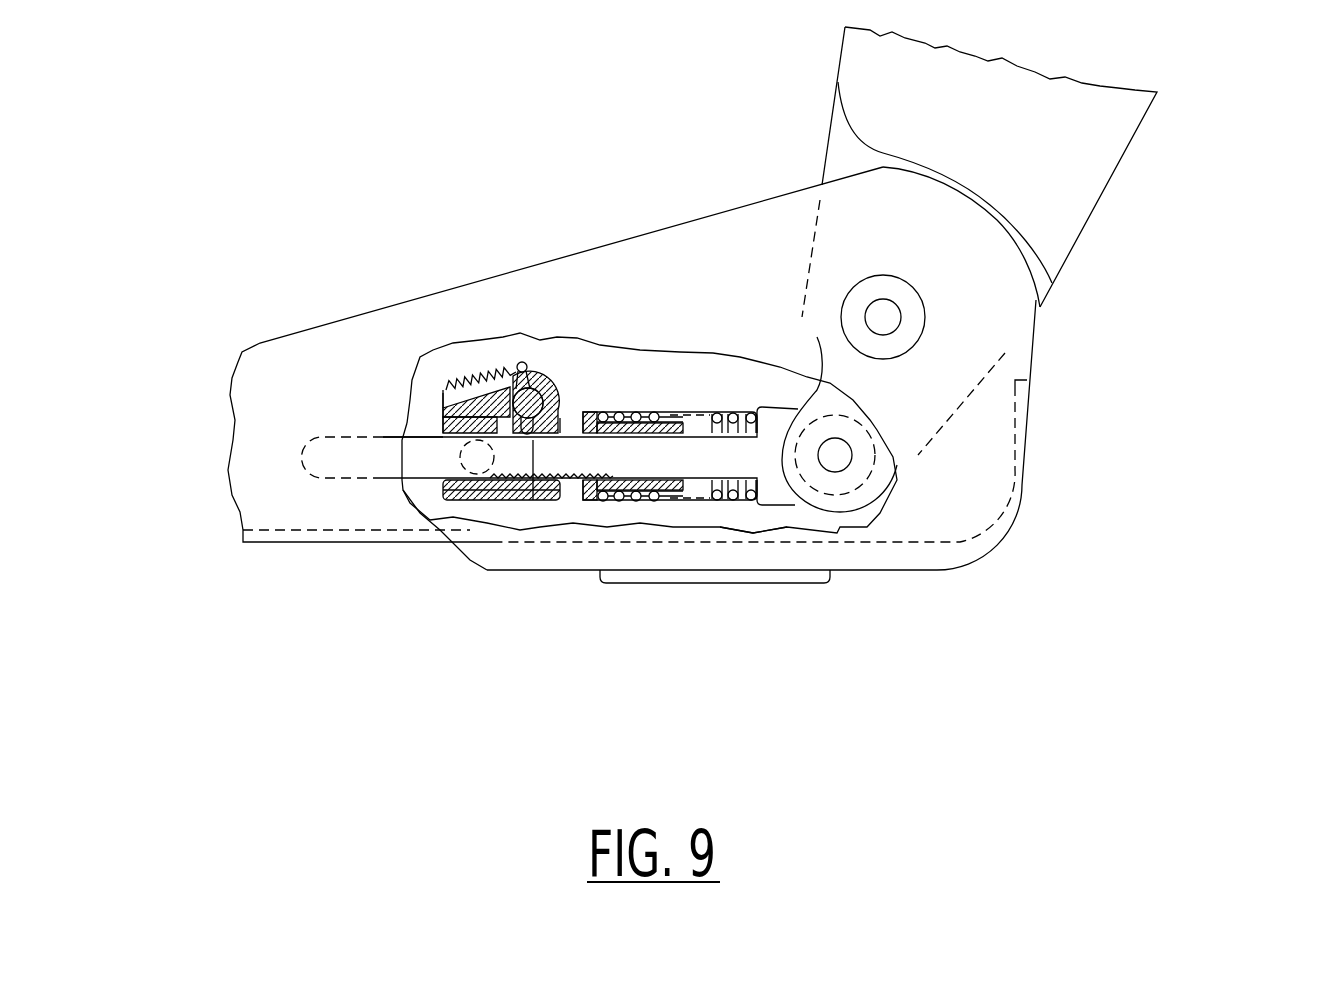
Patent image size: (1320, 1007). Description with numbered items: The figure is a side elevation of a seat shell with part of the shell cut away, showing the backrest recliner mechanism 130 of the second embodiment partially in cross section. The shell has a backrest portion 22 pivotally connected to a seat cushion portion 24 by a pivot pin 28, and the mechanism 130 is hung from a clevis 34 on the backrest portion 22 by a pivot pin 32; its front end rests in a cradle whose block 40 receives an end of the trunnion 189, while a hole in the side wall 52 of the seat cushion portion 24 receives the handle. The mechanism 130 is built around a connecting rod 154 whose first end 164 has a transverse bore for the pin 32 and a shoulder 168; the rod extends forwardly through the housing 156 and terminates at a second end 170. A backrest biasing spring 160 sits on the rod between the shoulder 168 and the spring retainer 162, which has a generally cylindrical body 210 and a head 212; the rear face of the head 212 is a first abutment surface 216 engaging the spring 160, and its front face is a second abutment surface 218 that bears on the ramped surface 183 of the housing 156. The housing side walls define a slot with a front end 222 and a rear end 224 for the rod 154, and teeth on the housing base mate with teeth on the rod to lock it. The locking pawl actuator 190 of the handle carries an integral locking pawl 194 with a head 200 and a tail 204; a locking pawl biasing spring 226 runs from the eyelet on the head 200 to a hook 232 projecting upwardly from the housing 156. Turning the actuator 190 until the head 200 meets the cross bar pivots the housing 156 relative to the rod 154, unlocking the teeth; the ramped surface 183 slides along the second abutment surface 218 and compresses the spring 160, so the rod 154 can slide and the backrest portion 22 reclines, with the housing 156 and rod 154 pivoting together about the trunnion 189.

The backrest portion 22 is at (1127, 163).
The seat cushion portion 24 is at (1030, 395).
The pivot pin 28 is at (883, 317).
The pivot pin 32 is at (835, 455).
The clevis 34 is at (850, 490).
The cradle section (block) 40 is at (420, 493).
The side wall 52 is at (260, 343).
The backrest recliner mechanism 130 is at (483, 340).
The connecting rod 154 is at (417, 432).
The housing 156 is at (437, 413).
The backrest biasing spring 160 is at (735, 413).
The spring retainer 162 is at (673, 493).
The first end 164 is at (790, 500).
The shoulder 168 is at (728, 548).
The second end 170 is at (308, 472).
The ramped surface 183 is at (563, 497).
The trunnion 189 is at (470, 497).
The locking pawl actuator 190 is at (527, 427).
The locking pawl 194 is at (520, 360).
The head 200 is at (528, 372).
The tail 204 is at (533, 500).
The cylindrical body 210 is at (670, 413).
The head 212 is at (600, 500).
The first abutment surface 216 is at (597, 413).
The second abutment surface 218 is at (567, 380).
The front end of slot 222 is at (461, 500).
The rear end of slot 224 is at (476, 380).
The locking pawl biasing spring 226 is at (466, 390).
The hook 232 is at (447, 390).